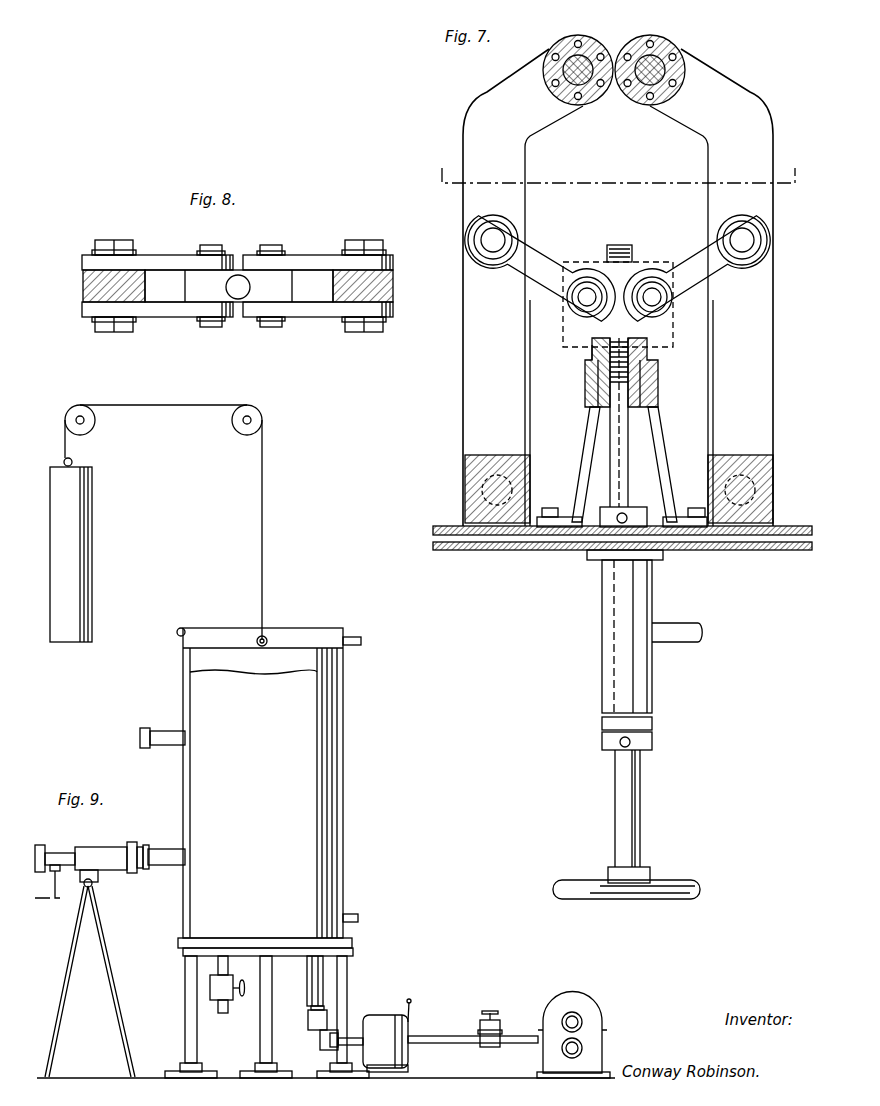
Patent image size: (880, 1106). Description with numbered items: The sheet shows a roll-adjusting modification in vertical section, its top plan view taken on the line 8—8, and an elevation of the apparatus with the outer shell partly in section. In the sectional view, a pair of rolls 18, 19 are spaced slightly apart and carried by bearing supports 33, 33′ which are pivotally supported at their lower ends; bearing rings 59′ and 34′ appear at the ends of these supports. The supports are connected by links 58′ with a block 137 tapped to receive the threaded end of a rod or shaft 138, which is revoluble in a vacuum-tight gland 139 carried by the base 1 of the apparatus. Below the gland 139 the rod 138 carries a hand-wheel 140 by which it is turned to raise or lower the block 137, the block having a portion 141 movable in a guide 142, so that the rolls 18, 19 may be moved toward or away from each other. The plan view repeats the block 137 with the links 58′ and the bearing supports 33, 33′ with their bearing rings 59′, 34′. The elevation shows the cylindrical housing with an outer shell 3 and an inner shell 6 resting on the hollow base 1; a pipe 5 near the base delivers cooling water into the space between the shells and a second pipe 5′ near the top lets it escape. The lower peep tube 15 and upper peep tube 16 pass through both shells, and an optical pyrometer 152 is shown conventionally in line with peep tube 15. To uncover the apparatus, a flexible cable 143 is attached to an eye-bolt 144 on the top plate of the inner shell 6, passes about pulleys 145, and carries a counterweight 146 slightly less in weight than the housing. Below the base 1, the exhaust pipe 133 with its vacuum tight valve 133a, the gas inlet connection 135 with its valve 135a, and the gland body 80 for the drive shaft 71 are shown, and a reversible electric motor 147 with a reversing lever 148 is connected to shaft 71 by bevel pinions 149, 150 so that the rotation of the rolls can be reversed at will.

In FIG. 7, the hollow base 1 is at (433, 546).
In FIG. 9, the hollow base 1 is at (176, 946).
In FIG. 9, the outer shell 3 is at (260, 783).
In FIG. 9, the pipe 5 is at (358, 916).
In FIG. 9, the second pipe 5′ is at (362, 641).
In FIG. 9, the inner shell 6 is at (228, 662).
In FIG. 7, the section line 8— 8 is at (616, 164).
In FIG. 9, the lower peep tube 15 is at (170, 850).
In FIG. 9, the upper peep tube 16 is at (140, 735).
In FIG. 7, the roll 18 is at (556, 84).
In FIG. 7, the roll 19 is at (676, 50).
In FIG. 7, the bearing support 33 is at (711, 287).
In FIG. 8, the bearing support 33 is at (395, 282).
In FIG. 7, the bearing support 33′ is at (523, 287).
In FIG. 8, the bearing support 33′ is at (83, 280).
In FIG. 7, the bearing 34′ is at (745, 240).
In FIG. 8, the bearing 34′ is at (365, 337).
In FIG. 7, the link 58′ is at (617, 268).
In FIG. 8, the link 58′ is at (160, 250).
In FIG. 7, the bearing 59′ is at (487, 248).
In FIG. 8, the bearing 59′ is at (105, 337).
In FIG. 9, the drive shaft 71 is at (308, 1020).
In FIG. 9, the gland body 80 is at (307, 982).
In FIG. 9, the exhaust pipe 133 is at (492, 1033).
In FIG. 9, the vacuum tight valve 133a is at (496, 1046).
In FIG. 9, the pipe connection 135 is at (215, 972).
In FIG. 9, the vacuum tight valve 135a is at (222, 988).
In FIG. 7, the block 137 is at (660, 336).
In FIG. 8, the block 137 is at (239, 286).
In FIG. 7, the rod or shaft 138 is at (622, 428).
In FIG. 7, the vacuum-tight gland 139 is at (600, 655).
In FIG. 7, the hand-wheel 140 is at (630, 900).
In FIG. 7, the portion 141 is at (655, 381).
In FIG. 7, the guide 142 is at (590, 381).
In FIG. 9, the flexible cable 143 is at (260, 578).
In FIG. 9, the eye-bolt 144 is at (266, 637).
In FIG. 9, the pulleys 145 is at (90, 428).
In FIG. 9, the counterweight 146 is at (70, 603).
In FIG. 9, the reversible electric motor 147 is at (382, 1015).
In FIG. 9, the reversing lever 148 is at (411, 1008).
In FIG. 9, the bevel pinion 149 is at (320, 1040).
In FIG. 9, the bevel pinion 150 is at (330, 1048).
In FIG. 9, the optical pyrometer 152 is at (92, 847).